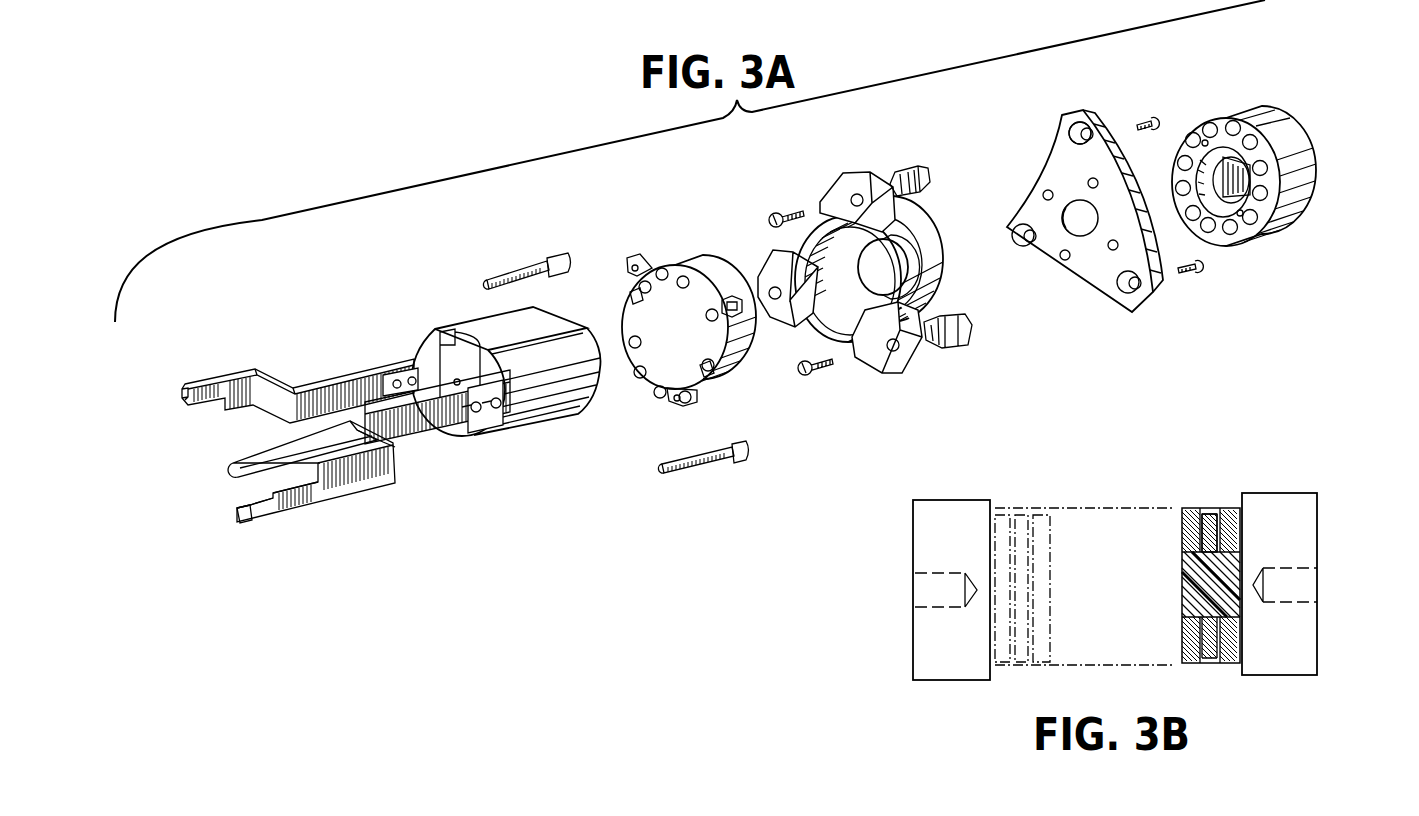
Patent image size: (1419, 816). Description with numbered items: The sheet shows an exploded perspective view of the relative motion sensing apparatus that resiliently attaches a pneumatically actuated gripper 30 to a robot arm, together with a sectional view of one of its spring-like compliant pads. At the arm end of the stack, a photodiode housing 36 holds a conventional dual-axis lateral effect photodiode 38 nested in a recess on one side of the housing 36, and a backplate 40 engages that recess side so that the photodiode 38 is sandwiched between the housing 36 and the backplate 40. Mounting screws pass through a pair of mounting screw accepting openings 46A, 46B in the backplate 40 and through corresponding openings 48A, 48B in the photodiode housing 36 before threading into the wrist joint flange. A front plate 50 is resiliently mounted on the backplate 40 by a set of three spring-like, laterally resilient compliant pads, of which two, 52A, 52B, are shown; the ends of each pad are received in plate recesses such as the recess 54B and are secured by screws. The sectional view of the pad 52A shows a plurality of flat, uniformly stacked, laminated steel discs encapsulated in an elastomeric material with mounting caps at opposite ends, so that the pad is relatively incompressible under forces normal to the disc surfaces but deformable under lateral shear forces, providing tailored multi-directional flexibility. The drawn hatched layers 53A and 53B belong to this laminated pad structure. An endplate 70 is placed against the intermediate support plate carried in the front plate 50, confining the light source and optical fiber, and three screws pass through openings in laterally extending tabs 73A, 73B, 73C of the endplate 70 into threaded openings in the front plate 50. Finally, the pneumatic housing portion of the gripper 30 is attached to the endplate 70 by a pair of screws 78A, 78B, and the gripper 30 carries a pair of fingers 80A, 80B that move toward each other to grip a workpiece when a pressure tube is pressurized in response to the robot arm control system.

In FIG. 3A, the pneumatically actuated gripper 30 is at (383, 328).
In FIG. 3A, the photodiode housing 36 is at (1278, 120).
In FIG. 3A, the photodiode 38 is at (1222, 163).
In FIG. 3A, the backplate 40 is at (1097, 120).
In FIG. 3A, the mounting screw accepting opening 46A is at (1043, 194).
In FIG. 3A, the mounting screw accepting opening 46B is at (1115, 249).
In FIG. 3A, the opening 48A is at (1205, 140).
In FIG. 3A, the opening 48B is at (1240, 216).
In FIG. 3A, the front plate 50 is at (857, 177).
In FIG. 3A, the compliant pad 52A is at (897, 173).
In FIG. 3B, the compliant pad 52A is at (1082, 500).
In FIG. 3A, the compliant pad 52B is at (933, 343).
In FIG. 3B, the bushing 53A is at (1228, 508).
In FIG. 3B, the bushing sleeve 53B is at (1210, 508).
In FIG. 3A, the recess 54B is at (1070, 135).
In FIG. 3A, the endplate 70 is at (703, 257).
In FIG. 3A, the tab 73A is at (690, 397).
In FIG. 3A, the tab 73B is at (730, 300).
In FIG. 3A, the tab 73C is at (638, 262).
In FIG. 3A, the screw 78A is at (525, 275).
In FIG. 3A, the screw 78B is at (707, 467).
In FIG. 3A, the finger 80A is at (340, 387).
In FIG. 3A, the finger 80B is at (383, 477).